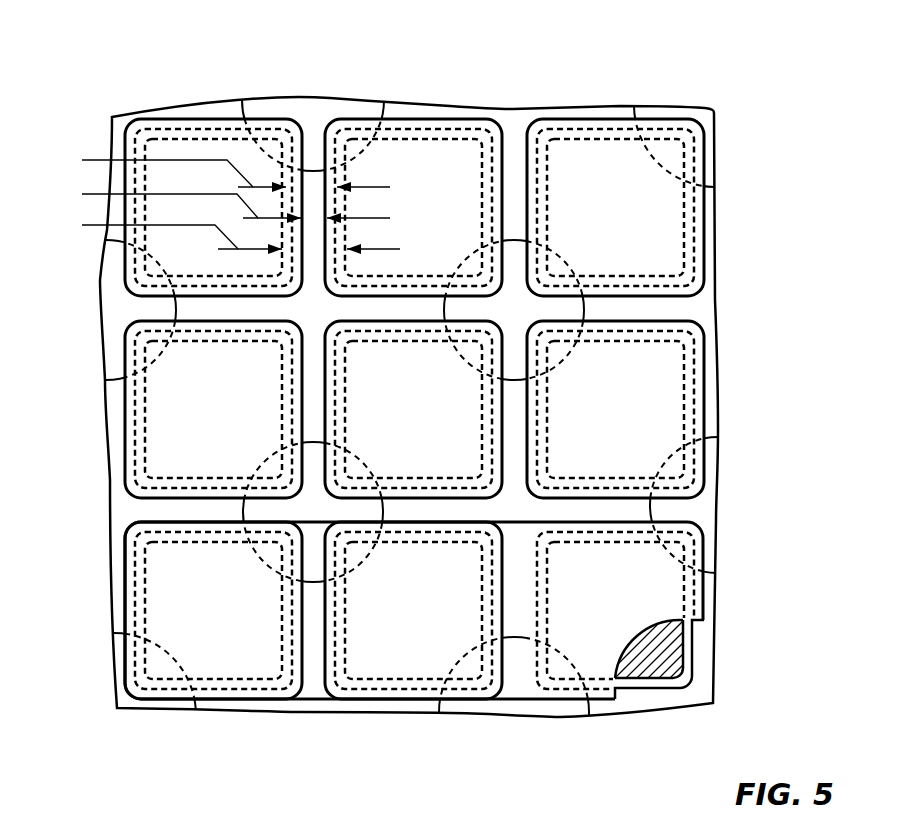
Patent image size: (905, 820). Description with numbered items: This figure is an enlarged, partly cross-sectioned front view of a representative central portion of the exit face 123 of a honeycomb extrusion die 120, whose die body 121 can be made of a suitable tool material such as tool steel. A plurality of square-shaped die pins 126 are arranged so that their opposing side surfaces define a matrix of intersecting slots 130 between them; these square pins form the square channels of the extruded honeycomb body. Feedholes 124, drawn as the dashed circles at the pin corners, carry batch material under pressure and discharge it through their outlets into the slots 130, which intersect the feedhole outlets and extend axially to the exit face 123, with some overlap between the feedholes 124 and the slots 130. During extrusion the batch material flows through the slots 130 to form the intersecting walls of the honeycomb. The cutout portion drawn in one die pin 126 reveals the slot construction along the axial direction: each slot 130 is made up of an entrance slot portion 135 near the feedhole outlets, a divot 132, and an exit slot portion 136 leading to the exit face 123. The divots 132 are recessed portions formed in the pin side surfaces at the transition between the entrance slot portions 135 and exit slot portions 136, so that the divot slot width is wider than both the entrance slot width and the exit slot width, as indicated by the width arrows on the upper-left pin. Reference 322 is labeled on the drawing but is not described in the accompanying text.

The honeycomb extrusion die 120 is at (178, 66).
The die body 121 is at (722, 413).
The exit face 123 is at (452, 170).
The feedholes 124 is at (252, 128).
The die pins 126 is at (414, 409).
The slots 130 is at (313, 118).
The divots 132 is at (687, 207).
The entrance slot portions 135 is at (699, 661).
The exit slot portions 136 is at (638, 326).
The ring corner 322 is at (155, 530).